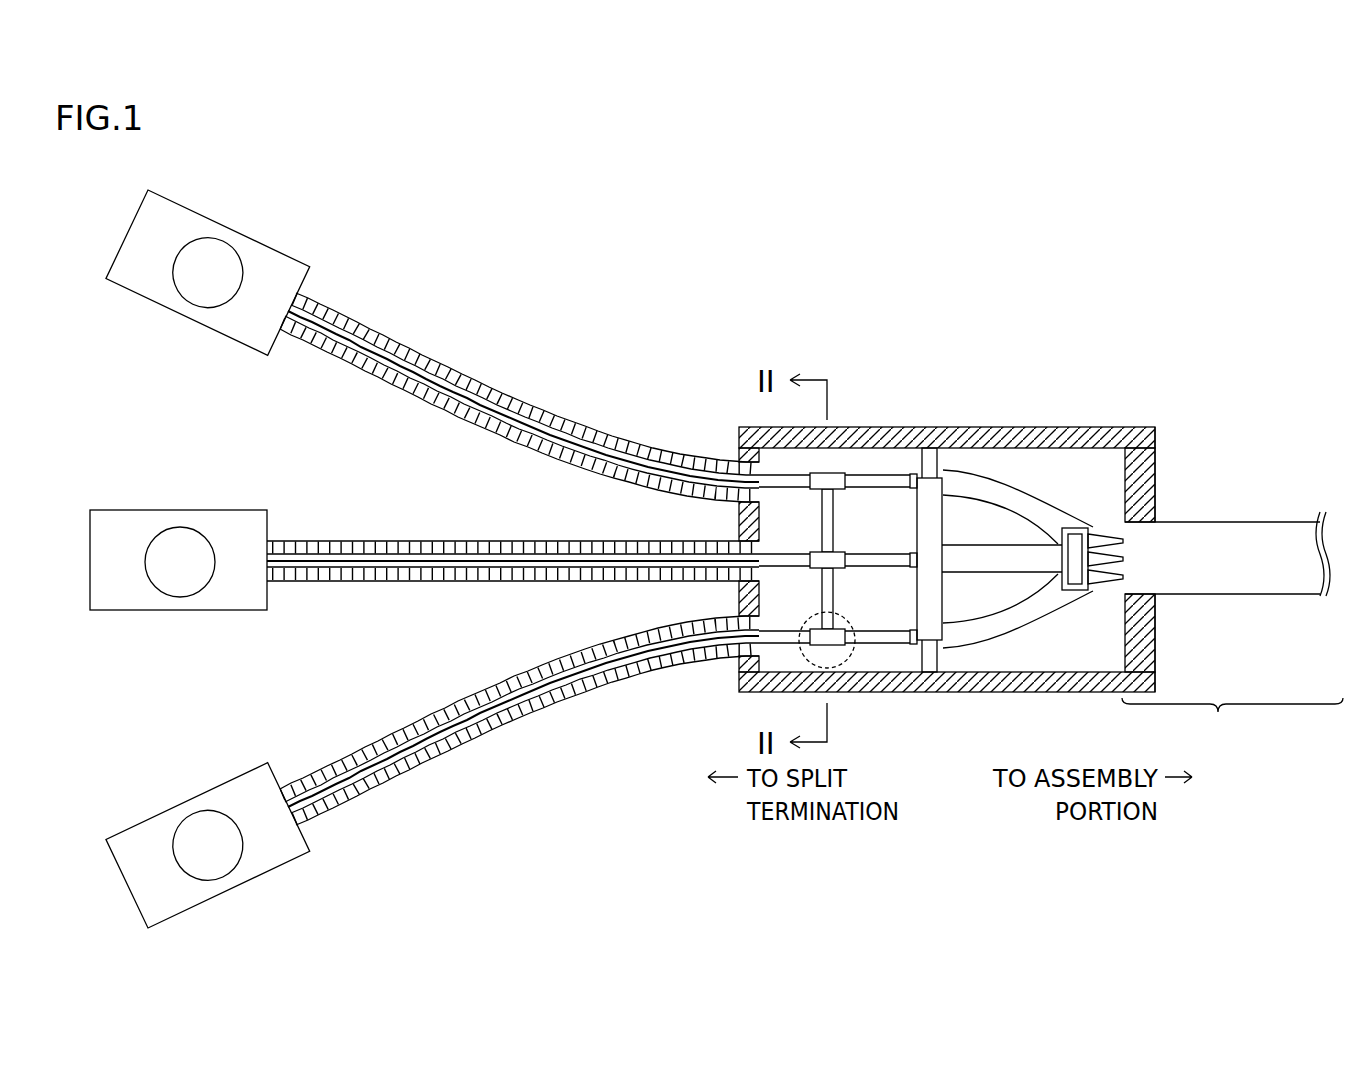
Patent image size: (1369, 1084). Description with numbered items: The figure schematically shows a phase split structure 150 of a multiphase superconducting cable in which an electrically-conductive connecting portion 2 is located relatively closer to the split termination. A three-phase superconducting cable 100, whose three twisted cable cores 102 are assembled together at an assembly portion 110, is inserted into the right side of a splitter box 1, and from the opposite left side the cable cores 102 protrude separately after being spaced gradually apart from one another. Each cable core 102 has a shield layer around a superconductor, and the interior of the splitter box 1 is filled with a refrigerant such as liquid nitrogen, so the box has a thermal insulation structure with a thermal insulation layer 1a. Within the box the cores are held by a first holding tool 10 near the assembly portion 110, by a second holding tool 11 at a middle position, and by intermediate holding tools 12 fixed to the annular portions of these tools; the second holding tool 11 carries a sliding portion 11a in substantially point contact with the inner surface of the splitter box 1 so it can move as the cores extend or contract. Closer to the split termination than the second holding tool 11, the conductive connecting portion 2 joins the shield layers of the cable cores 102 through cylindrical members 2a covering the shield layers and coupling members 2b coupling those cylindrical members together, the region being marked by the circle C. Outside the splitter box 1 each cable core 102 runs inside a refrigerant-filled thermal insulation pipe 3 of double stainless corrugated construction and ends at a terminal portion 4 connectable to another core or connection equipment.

The splitter box 1 is at (1162, 475).
The thermal insulation layer 1a is at (1156, 439).
The electrically-conductive connecting portion 2 is at (827, 493).
The cylindrical member 2a is at (832, 478).
The coupling member 2b is at (818, 592).
The thermal insulation pipe 3 is at (665, 618).
The terminal portion 4 is at (245, 353).
The first holding tool 10 is at (1120, 527).
The second holding tool 11 is at (1010, 543).
The sliding portion 11a is at (931, 548).
The intermediate holding tool 12 is at (1086, 530).
The three-phase superconducting cable 100 is at (1207, 522).
The cable core 102 is at (545, 446).
The assembly portion 110 is at (1232, 723).
The phase split structure 150 is at (1203, 345).
The enlarged section circle C is at (853, 662).